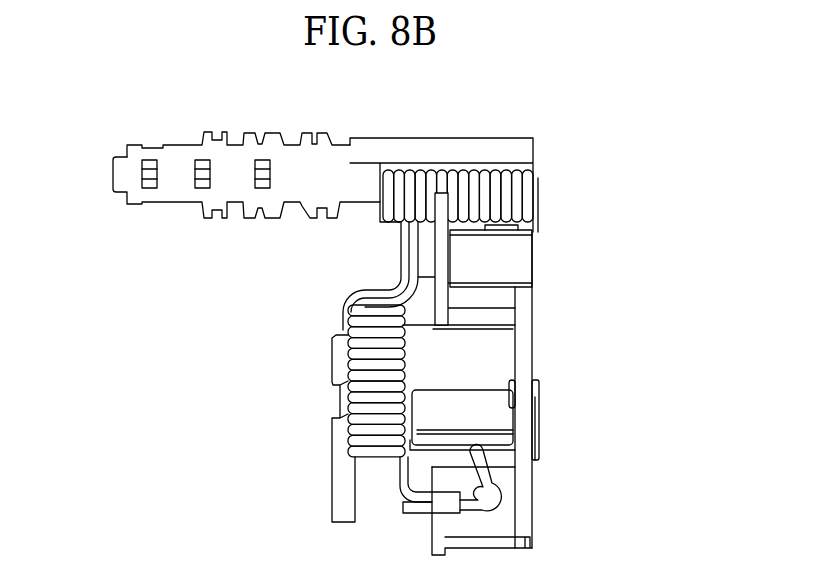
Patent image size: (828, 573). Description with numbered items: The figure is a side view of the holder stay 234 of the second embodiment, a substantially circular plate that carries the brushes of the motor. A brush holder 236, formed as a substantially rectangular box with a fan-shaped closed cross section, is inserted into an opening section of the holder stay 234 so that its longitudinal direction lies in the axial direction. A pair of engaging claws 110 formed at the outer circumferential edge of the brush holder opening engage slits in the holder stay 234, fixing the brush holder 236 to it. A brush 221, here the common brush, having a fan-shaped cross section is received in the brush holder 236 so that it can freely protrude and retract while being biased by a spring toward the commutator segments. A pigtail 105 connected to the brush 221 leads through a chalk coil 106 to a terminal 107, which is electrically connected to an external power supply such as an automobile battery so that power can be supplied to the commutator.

The pigtail 105 is at (380, 287).
The chalk coil 106 is at (486, 173).
The terminal 107 is at (183, 145).
The engaging claw 110 is at (533, 385).
The brush 221 is at (538, 437).
The holder stay 234 is at (530, 527).
The brush holder 236 is at (475, 400).